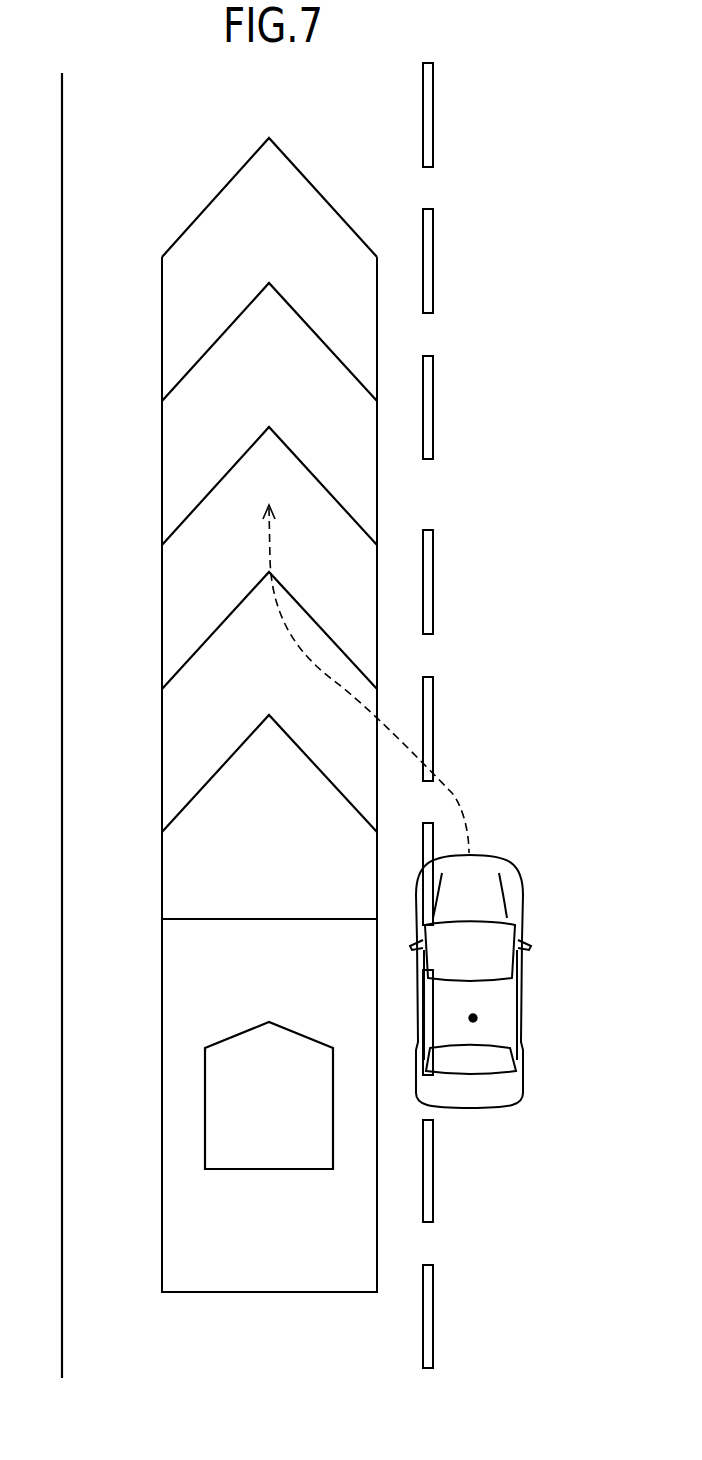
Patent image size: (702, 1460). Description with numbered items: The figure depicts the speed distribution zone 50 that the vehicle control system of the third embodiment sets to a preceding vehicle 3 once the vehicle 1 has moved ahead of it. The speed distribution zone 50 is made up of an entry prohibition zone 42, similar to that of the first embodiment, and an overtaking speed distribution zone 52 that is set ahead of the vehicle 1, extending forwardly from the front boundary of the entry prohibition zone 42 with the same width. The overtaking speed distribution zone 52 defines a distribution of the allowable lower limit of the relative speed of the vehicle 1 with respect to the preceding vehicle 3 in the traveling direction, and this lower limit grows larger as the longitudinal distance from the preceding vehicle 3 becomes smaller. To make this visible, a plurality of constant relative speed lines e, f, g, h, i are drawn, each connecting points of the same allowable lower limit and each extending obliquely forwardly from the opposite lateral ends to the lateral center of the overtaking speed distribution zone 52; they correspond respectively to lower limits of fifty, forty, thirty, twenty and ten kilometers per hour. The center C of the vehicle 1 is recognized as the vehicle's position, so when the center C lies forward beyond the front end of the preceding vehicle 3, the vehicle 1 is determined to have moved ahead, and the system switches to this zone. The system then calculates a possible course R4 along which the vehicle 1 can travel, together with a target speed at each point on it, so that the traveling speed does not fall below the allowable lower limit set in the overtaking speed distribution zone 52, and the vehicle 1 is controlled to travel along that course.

The vehicle 1 is at (497, 995).
The center of the vehicle C is at (478, 1017).
The possible course R4 is at (458, 792).
The speed distribution zone 50 is at (388, 521).
The overtaking speed distribution zone 52 is at (162, 855).
The entry prohibition zone 42 is at (171, 1182).
The preceding vehicle 3 is at (218, 1086).
The constant relative speed line i is at (202, 212).
The constant relative speed line h is at (202, 356).
The constant relative speed line g is at (202, 500).
The constant relative speed line f is at (202, 645).
The constant relative speed line e is at (202, 788).